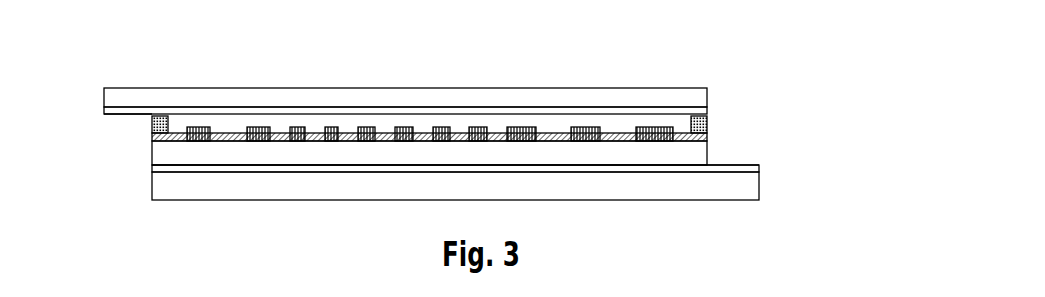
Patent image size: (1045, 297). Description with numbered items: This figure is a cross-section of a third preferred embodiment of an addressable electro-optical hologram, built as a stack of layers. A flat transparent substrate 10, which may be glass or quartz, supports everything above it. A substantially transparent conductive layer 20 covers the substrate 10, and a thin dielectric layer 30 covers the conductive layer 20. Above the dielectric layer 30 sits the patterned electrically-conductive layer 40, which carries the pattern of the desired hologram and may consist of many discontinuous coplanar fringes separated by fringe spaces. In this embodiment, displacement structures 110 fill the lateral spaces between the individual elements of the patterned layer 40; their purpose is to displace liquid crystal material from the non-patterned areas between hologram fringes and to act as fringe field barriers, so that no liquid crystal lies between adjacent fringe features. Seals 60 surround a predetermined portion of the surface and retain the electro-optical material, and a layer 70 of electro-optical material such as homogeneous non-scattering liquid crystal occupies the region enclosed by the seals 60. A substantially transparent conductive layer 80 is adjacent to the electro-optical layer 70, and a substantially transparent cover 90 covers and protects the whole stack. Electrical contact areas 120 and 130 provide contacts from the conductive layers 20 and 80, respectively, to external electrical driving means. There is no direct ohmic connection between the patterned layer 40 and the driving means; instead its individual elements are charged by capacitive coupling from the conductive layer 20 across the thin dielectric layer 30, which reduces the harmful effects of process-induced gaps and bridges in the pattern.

The transparent substrate 10 is at (673, 190).
The transparent conductive layer 20 is at (602, 170).
The dielectric layer 30 is at (687, 150).
The patterned electrically-conductive layer 40 is at (708, 132).
The seals 60 is at (150, 125).
The electro-optical material layer 70 is at (207, 123).
The transparent conductive layer 80 is at (697, 112).
The transparent cover 90 is at (667, 98).
The displacement structures 110 is at (265, 127).
The electrical contact area 120 is at (738, 163).
The electrical contact area 130 is at (112, 122).